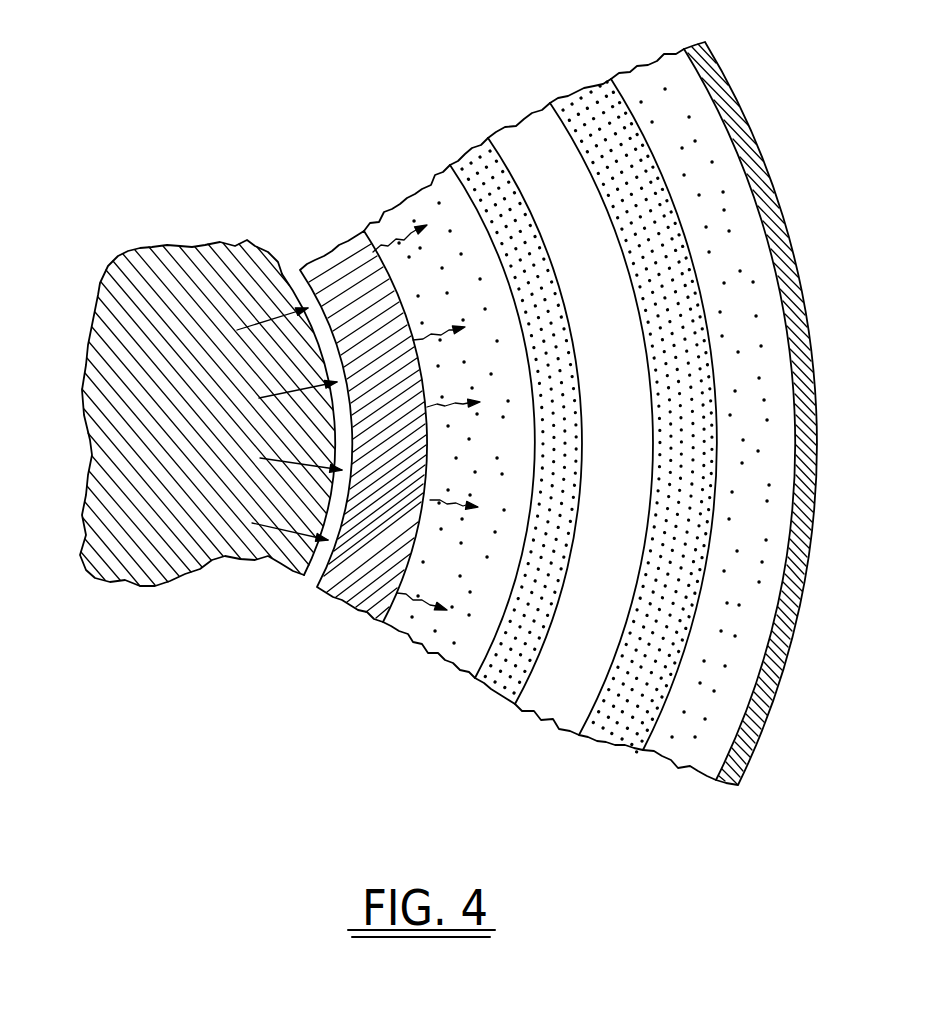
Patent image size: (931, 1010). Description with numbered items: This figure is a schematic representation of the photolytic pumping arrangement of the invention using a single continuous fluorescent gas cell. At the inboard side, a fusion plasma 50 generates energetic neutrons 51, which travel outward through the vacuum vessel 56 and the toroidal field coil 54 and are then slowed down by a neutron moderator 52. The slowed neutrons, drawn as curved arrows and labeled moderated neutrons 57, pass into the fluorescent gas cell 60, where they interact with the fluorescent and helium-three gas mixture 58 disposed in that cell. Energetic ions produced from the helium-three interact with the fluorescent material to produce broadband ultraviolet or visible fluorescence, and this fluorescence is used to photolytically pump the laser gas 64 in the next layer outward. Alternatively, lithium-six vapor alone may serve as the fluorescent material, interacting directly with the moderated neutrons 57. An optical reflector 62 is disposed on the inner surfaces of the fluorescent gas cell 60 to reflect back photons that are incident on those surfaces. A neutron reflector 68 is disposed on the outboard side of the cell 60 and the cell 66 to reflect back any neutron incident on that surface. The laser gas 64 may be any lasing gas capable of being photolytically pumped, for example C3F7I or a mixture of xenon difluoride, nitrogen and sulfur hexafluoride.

The fusion plasma 50 is at (195, 280).
The energetic neutrons 51 is at (265, 307).
The neutron moderator 52 is at (468, 645).
The toroidal field coil 54 is at (355, 582).
The vacuum vessel 56 is at (320, 560).
The moderated neutrons 57 is at (405, 602).
The fluorescent and 3He gas mixture 58 is at (540, 77).
The fluorescent gas cell 60 is at (610, 722).
The optical reflector 62 is at (462, 165).
The laser gas 64 is at (587, 117).
The cell 66 is at (522, 145).
The neutron reflector 68 is at (725, 107).